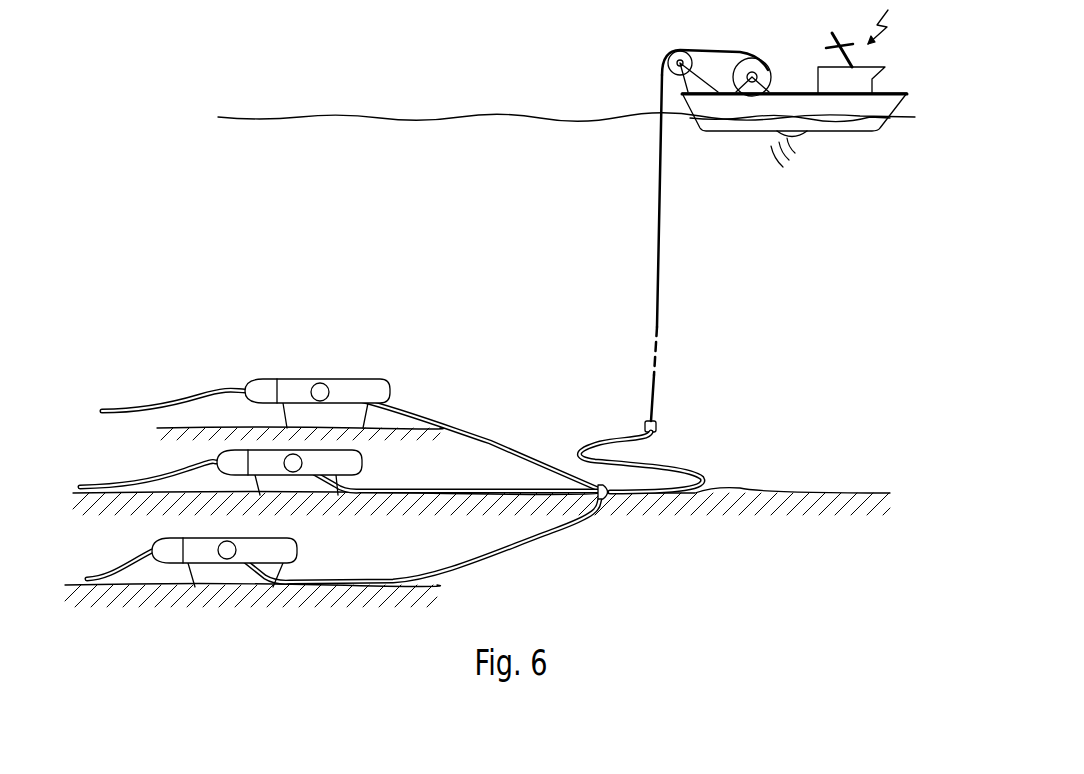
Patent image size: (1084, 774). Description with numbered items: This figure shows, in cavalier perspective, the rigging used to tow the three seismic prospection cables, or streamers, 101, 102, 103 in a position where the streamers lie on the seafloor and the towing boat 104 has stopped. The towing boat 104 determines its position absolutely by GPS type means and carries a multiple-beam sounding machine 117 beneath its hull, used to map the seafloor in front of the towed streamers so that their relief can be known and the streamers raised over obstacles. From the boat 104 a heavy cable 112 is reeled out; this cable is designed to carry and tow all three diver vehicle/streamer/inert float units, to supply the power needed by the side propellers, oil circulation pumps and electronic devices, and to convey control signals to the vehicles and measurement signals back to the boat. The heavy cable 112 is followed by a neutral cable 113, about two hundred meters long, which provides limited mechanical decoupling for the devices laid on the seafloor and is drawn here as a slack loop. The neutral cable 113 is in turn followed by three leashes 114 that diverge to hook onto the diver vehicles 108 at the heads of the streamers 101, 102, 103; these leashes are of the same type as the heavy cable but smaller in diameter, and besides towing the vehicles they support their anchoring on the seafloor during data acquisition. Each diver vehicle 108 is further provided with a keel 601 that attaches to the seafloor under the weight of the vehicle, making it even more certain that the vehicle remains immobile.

The seismic prospection cable 101 is at (190, 398).
The seismic prospection cable 102 is at (180, 463).
The seismic prospection cable 103 is at (353, 577).
The towing boat 104 is at (727, 125).
The diver vehicle 108 is at (203, 553).
The heavy cable 112 is at (660, 270).
The neutral cable 113 is at (660, 458).
The leash 114 is at (553, 537).
The multiple-beam sounding machine 117 is at (797, 133).
The keel 601 is at (233, 575).